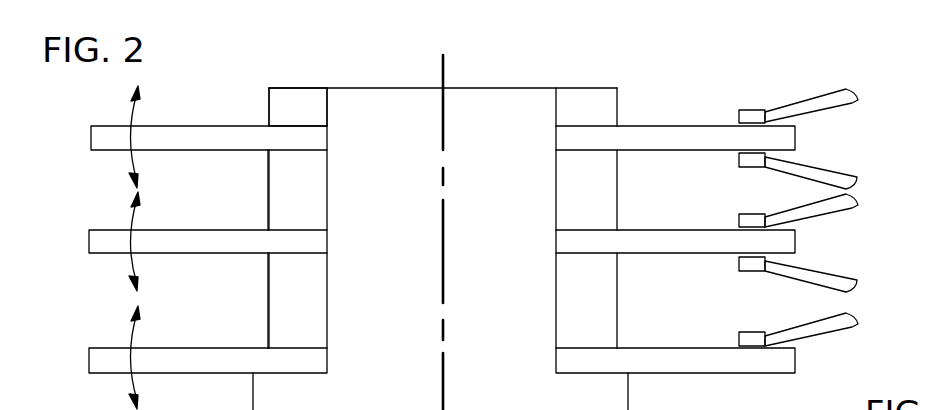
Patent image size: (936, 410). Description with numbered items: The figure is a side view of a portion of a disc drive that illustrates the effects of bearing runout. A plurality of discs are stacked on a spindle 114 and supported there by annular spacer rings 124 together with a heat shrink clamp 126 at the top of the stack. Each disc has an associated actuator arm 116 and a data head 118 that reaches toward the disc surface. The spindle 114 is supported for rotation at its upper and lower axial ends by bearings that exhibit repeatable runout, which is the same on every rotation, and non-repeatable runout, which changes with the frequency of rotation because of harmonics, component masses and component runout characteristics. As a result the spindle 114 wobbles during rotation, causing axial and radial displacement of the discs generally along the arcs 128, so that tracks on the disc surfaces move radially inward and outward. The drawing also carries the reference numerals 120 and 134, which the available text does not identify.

The chip carrier assembly 114 is at (536, 79).
The contact members 116 is at (835, 107).
The contact pads 118 is at (750, 110).
The support post 120 is at (612, 395).
The spacer regions 124 is at (297, 195).
The top block 126 is at (309, 103).
The pivot motion arrows 128 is at (131, 138).
The center line 134 is at (446, 73).